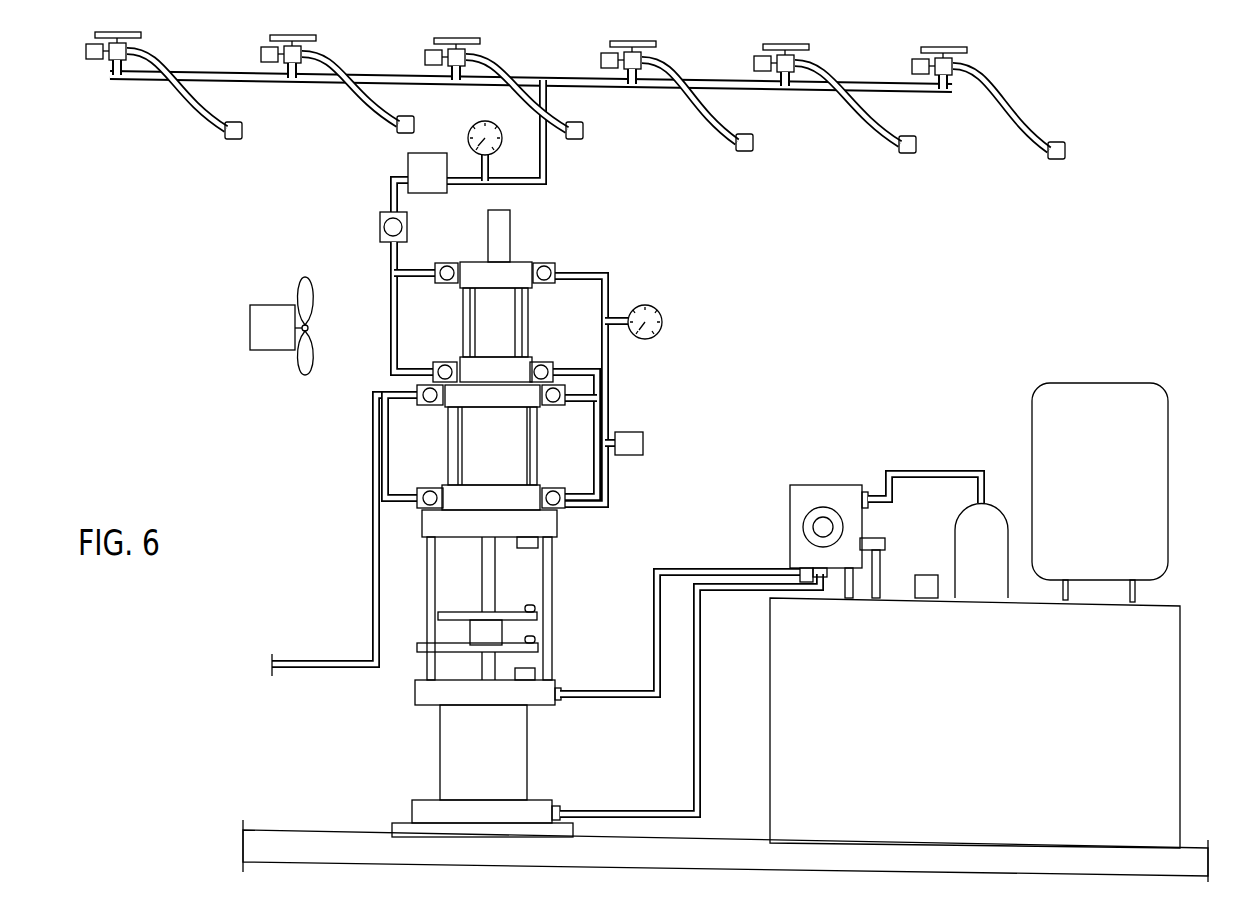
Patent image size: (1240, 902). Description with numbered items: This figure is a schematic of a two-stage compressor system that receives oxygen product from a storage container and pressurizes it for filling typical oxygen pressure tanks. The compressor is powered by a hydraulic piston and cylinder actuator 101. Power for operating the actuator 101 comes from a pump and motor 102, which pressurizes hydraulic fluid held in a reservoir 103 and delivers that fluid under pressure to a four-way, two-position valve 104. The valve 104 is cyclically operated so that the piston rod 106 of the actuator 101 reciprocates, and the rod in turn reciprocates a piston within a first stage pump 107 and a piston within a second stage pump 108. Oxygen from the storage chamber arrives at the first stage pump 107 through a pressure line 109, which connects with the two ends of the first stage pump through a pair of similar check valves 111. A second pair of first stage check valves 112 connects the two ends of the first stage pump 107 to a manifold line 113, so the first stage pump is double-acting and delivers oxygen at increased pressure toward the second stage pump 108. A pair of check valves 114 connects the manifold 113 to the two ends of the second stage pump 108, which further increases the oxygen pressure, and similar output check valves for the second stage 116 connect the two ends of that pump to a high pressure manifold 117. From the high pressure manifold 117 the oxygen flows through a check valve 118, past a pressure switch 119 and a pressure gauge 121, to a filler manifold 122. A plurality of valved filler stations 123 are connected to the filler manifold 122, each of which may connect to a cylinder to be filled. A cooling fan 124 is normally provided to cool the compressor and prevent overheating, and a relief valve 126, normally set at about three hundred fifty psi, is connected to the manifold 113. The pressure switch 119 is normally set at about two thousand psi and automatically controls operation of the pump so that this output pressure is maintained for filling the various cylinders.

The hydraulic piston and cylinder actuator 101 is at (527, 740).
The pump and motor 102 is at (1032, 412).
The reservoir 103 is at (936, 755).
The four-way, two-position valve 104 is at (813, 485).
The piston rod 106 is at (492, 580).
The first stage pump 107 is at (481, 445).
The second stage pump 108 is at (485, 333).
The pressure line 109 is at (312, 660).
The check valves 111 is at (428, 488).
The first stage check valves 112 is at (553, 488).
The manifold line 113 is at (608, 412).
The check valves 114 is at (543, 362).
The output check valves for the second stage 116 is at (436, 362).
The high pressure manifold 117 is at (388, 318).
The check valve 118 is at (408, 226).
The pressure switch 119 is at (422, 165).
The pressure gauge 121 is at (503, 140).
The filler manifold 122 is at (572, 74).
The valved filler stations 123 is at (148, 52).
The cooling fan 124 is at (265, 350).
The relief valve 126 is at (643, 445).